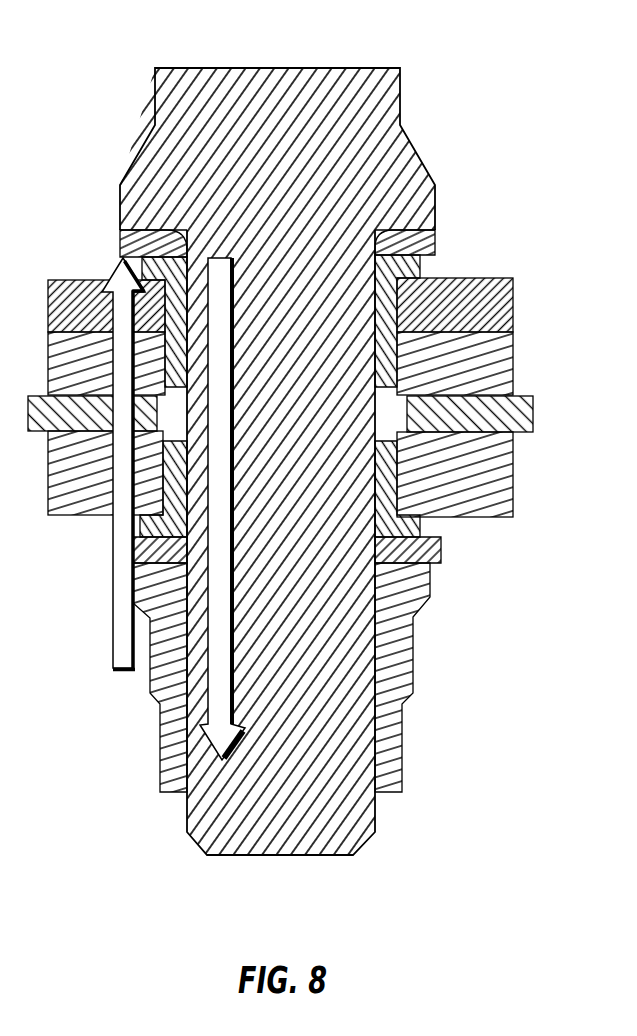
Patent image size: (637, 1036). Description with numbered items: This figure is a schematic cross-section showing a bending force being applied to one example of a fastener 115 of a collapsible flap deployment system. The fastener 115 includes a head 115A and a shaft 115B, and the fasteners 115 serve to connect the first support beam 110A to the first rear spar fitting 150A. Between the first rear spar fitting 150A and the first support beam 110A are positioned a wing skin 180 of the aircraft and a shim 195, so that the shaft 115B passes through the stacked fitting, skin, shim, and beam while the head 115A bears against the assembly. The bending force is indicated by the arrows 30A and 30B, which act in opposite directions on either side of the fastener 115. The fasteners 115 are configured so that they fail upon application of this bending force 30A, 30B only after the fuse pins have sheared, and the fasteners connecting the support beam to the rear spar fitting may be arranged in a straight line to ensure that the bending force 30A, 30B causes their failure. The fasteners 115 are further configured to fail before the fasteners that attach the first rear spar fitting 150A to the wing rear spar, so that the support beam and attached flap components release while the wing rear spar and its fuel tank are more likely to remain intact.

The fastener 115 is at (320, 428).
The head 115A is at (333, 197).
The shaft 115B is at (322, 683).
The first rear spar fitting 150A is at (512, 303).
The wing skin 180 is at (500, 361).
The shim 195 is at (527, 415).
The first support beam 110A is at (502, 477).
The bending force 30A is at (117, 273).
The bending force 30B is at (207, 737).